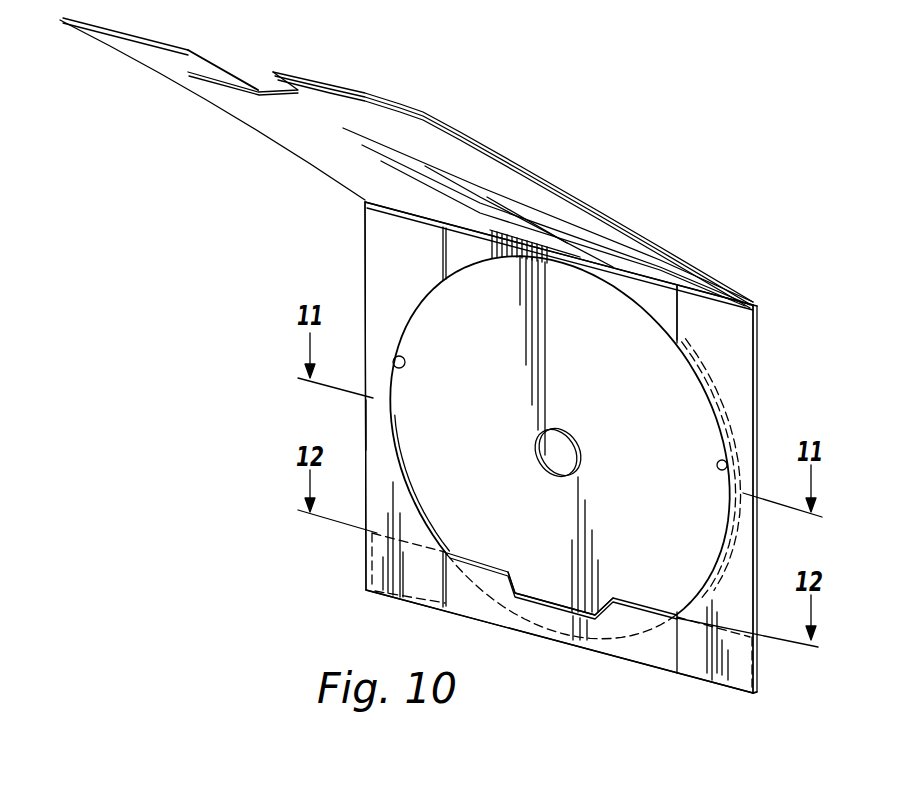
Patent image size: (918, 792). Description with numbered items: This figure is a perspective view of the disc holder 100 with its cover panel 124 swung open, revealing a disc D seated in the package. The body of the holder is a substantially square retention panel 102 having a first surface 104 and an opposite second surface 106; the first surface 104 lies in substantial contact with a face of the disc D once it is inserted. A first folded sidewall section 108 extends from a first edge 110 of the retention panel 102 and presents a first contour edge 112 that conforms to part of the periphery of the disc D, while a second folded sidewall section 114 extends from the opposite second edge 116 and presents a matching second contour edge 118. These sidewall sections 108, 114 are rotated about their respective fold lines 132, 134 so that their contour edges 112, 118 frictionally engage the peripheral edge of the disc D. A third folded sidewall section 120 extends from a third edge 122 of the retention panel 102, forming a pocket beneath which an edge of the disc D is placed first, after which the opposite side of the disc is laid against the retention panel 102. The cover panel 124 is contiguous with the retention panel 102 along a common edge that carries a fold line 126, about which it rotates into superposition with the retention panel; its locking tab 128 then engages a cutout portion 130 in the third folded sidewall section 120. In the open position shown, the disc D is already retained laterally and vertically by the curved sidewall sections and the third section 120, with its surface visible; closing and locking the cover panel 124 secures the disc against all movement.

The disc holder 100 is at (686, 172).
The retention panel 102 is at (766, 310).
The first surface 104 is at (662, 301).
The second surface 106 is at (761, 342).
The first folded sidewall section 108 is at (713, 340).
The first edge 110 is at (758, 547).
The first contour edge 112 is at (724, 458).
The second folded sidewall section 114 is at (390, 240).
The second edge 116 is at (366, 423).
The second contour edge 118 is at (397, 355).
The third folded sidewall section 120 is at (615, 647).
The third edge 122 is at (673, 669).
The cover panel 124 is at (505, 157).
The fold line 126 is at (755, 300).
The locking tab 128 is at (240, 77).
The cutout portion 130 is at (550, 603).
The fold line 132 is at (759, 395).
The fold line 134 is at (365, 275).
The disc D is at (643, 423).